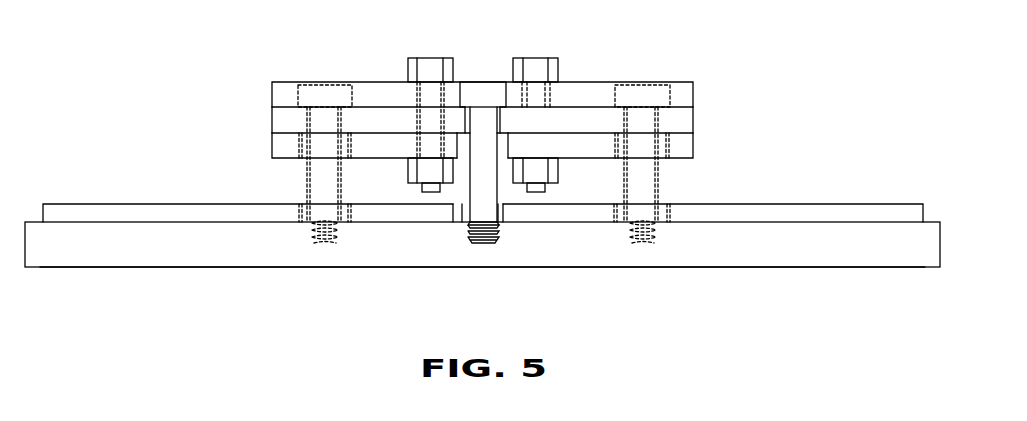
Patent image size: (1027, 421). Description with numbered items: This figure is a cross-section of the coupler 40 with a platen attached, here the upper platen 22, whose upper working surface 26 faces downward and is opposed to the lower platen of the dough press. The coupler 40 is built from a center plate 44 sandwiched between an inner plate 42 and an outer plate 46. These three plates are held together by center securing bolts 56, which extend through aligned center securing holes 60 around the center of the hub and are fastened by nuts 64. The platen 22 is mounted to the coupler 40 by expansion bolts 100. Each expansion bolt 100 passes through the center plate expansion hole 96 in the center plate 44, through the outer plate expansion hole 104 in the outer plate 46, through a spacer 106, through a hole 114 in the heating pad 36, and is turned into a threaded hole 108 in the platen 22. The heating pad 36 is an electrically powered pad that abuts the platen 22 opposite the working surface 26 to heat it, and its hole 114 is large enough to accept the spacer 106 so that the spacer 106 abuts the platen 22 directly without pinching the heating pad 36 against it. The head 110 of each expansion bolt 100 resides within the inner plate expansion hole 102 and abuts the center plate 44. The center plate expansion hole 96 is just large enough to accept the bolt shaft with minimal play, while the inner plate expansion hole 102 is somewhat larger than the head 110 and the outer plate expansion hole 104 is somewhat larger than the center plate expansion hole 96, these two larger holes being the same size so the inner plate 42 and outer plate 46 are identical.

The upper platen 22 is at (850, 265).
The upper working surface 26 is at (770, 268).
The heating pad 36 is at (768, 203).
The coupler 40 is at (492, 129).
The inner plate 42 is at (695, 95).
The center plate 44 is at (695, 118).
The outer plate 46 is at (695, 145).
The center securing bolts 56 is at (430, 57).
The center securing holes 60 is at (415, 93).
The nuts 64 is at (408, 170).
The center plate expansion hole 96 is at (503, 112).
The expansion bolts 100 is at (306, 185).
The inner plate expansion hole 102 is at (512, 89).
The outer plate expansion hole 104 is at (510, 140).
The spacer 106 is at (500, 193).
The threaded hole 108 is at (469, 236).
The head 110 is at (504, 146).
The hole 114 is at (508, 207).